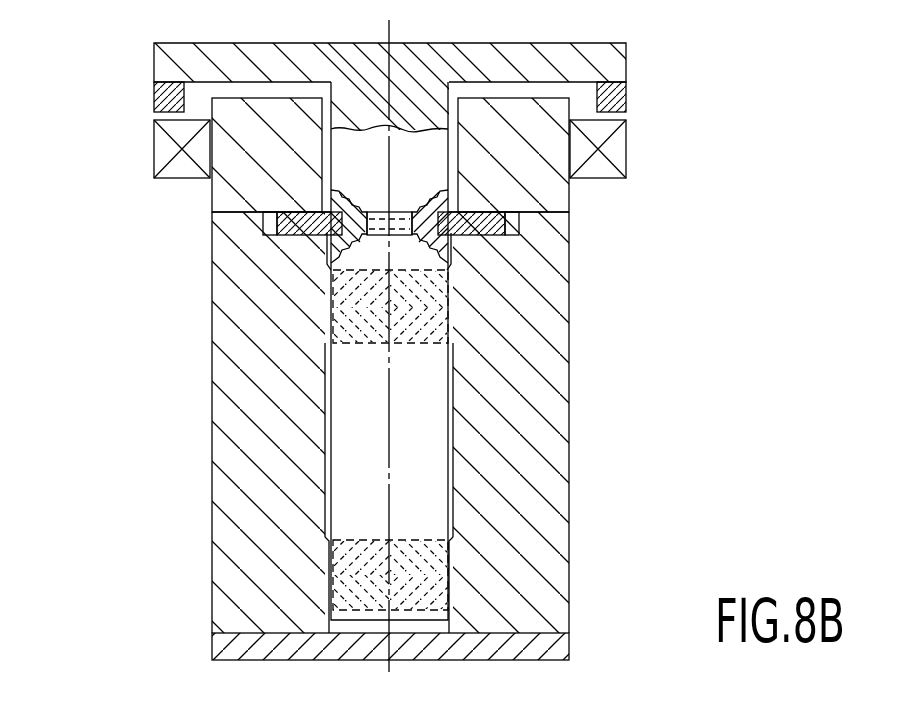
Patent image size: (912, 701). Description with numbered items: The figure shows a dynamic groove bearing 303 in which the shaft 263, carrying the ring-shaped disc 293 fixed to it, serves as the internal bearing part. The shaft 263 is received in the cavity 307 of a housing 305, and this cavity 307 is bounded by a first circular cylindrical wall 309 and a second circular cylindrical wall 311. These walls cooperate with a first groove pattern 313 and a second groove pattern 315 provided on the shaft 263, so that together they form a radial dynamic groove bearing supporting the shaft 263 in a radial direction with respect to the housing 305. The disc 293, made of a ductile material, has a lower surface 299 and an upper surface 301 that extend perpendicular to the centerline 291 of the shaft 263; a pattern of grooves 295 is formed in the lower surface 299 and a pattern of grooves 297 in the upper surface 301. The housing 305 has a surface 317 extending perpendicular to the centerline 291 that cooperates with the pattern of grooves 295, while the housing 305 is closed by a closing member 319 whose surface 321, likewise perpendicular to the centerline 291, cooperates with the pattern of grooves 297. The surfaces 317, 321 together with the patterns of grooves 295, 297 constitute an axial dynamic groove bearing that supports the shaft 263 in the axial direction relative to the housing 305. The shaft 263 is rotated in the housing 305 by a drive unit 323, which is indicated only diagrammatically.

The shaft 263 is at (435, 431).
The centerline 291 is at (390, 478).
The ring-shaped disc 293 is at (340, 242).
The pattern of grooves 295 is at (345, 262).
The pattern of grooves 297 is at (487, 200).
The lower surface 299 is at (450, 252).
The upper surface 301 is at (285, 213).
The dynamic groove bearing 303 is at (183, 441).
The housing 305 is at (243, 384).
The cavity 307 is at (455, 392).
The first circular cylindrical wall 309 is at (453, 290).
The second circular cylindrical wall 311 is at (452, 557).
The first groove pattern 313 is at (335, 320).
The second groove pattern 315 is at (340, 591).
The surface 317 is at (523, 224).
The closing member 319 is at (533, 127).
The surface 321 is at (268, 224).
The drive unit 323 is at (143, 150).